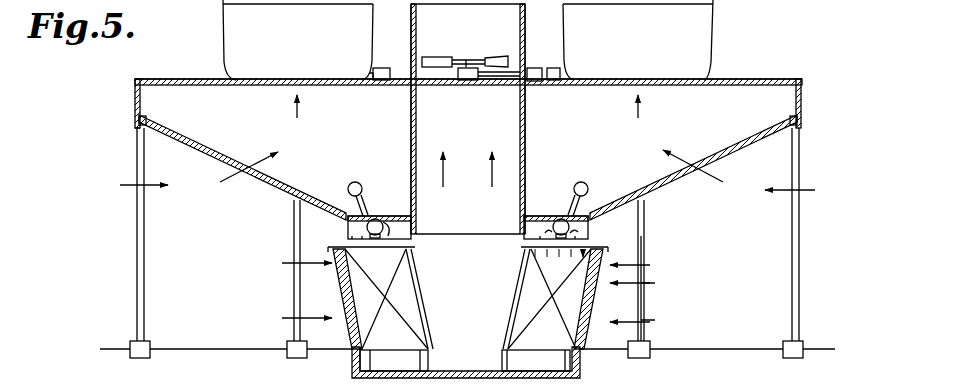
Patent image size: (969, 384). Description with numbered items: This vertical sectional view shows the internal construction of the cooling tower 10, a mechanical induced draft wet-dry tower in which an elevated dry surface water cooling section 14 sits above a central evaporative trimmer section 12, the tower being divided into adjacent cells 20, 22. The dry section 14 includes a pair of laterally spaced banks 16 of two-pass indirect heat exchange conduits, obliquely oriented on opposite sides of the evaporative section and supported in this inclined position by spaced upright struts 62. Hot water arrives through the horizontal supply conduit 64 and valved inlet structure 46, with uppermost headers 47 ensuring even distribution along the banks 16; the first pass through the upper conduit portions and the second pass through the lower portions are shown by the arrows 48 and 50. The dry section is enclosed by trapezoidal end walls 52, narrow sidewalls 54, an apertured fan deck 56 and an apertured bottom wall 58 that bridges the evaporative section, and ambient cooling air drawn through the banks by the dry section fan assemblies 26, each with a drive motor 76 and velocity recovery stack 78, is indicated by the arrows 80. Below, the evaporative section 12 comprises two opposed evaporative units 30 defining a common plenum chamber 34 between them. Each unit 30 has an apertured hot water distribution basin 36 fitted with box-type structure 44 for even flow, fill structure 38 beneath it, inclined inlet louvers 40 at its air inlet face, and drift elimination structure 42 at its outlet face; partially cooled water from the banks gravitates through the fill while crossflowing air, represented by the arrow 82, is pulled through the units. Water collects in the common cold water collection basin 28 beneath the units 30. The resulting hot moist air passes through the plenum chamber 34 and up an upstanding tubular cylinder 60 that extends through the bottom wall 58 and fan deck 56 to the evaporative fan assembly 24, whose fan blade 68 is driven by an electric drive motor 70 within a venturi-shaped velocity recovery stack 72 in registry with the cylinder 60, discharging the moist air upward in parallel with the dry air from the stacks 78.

The cooling tower 10 is at (812, 44).
The evaporative trimmer section 12 is at (646, 283).
The dry surface water cooling section 14 is at (805, 108).
The bank of indirect heat exchange conduits 16 is at (206, 168).
The cell 20 is at (222, 13).
The cell 22 is at (134, 130).
The fan assembly 24 is at (410, 31).
The fan assembly 26 is at (720, 16).
The cold water collection basin 28 is at (581, 369).
The evaporative unit 30 is at (523, 302).
The plenum chamber 34 is at (463, 258).
The hot water distribution basin 36 is at (348, 237).
The evaporative fill structure 38 is at (588, 339).
The inlet louvers 40 is at (347, 331).
The drift elimination structure 42 is at (501, 338).
The box-type structure 44 is at (398, 221).
The hot water inlet structure 46 is at (345, 214).
The header 47 is at (141, 122).
The arrow 48 is at (270, 173).
The arrow 50 is at (283, 201).
The end wall 52 is at (575, 117).
The sidewall 54 is at (135, 98).
The fan deck 56 is at (745, 82).
The bottom wall 58 is at (527, 215).
The tubular cylinder 60 is at (410, 128).
The upright strut 62 is at (137, 310).
The hot water supply conduit 64 is at (360, 183).
The fan blade 68 is at (442, 56).
The electric drive motor 70 is at (540, 68).
The velocity recovery stack 72 is at (526, 28).
The drive motor 76 is at (374, 70).
The velocity recovery stack 78 is at (235, 38).
The arrows 80 is at (300, 112).
The arrow 82 is at (445, 186).